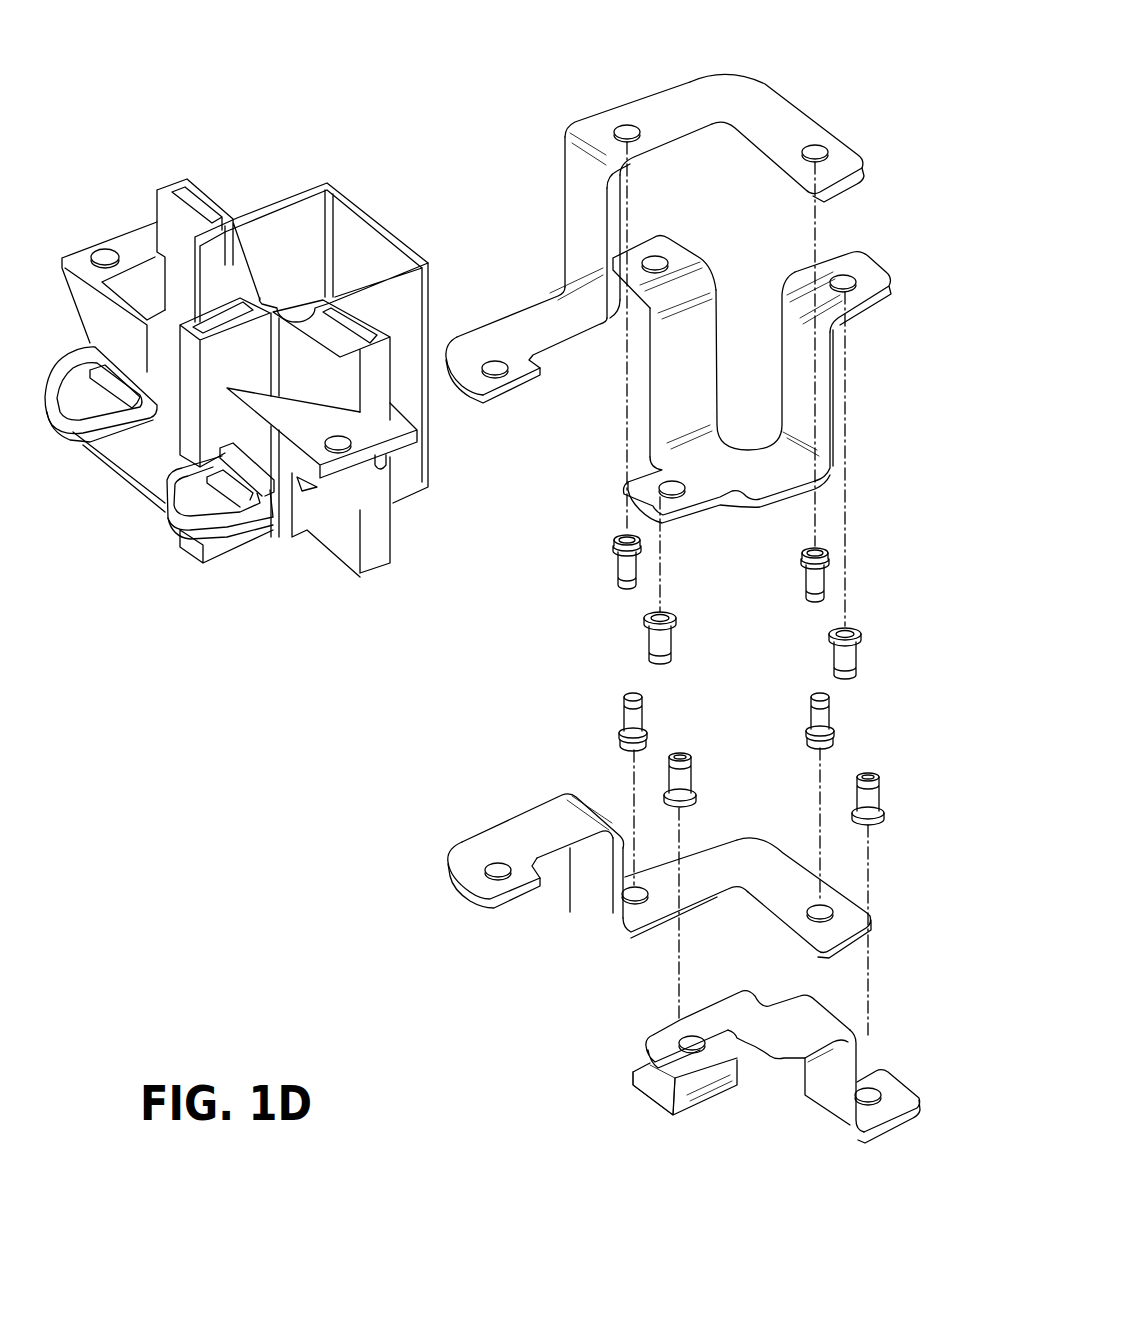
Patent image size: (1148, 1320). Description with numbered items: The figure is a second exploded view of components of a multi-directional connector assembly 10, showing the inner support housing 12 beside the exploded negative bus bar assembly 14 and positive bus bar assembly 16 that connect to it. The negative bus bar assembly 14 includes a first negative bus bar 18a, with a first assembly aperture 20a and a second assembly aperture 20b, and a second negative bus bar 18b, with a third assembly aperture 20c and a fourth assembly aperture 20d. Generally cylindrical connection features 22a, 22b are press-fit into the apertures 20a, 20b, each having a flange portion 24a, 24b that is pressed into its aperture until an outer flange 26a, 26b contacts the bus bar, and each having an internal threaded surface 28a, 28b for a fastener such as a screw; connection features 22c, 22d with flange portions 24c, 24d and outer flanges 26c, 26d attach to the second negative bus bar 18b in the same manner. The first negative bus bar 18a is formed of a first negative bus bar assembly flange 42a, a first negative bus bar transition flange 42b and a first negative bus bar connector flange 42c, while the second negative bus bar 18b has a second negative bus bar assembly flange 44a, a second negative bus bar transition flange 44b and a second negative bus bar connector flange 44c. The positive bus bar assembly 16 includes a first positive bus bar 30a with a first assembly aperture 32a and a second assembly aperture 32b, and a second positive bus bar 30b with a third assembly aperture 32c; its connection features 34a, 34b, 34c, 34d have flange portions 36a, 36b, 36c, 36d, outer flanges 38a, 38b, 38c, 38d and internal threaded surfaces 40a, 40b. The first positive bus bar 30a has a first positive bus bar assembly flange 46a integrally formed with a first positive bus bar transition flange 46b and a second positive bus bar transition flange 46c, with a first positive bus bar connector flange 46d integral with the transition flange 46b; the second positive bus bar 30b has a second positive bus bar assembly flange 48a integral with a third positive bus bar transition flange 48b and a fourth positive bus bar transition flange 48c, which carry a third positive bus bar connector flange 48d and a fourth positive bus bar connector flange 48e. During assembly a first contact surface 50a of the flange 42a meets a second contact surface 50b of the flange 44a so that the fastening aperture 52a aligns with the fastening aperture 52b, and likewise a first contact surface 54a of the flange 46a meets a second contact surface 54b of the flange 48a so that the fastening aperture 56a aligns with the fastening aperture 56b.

The multi-directional connector assembly 10 is at (237, 753).
The inner support housing 12 is at (143, 462).
The negative bus bar assembly 14 is at (672, 247).
The positive bus bar assembly 16 is at (689, 972).
The first negative bus bar 18a is at (794, 125).
The second negative bus bar 18b is at (685, 890).
The first assembly aperture 20a is at (625, 125).
The second assembly aperture 20b is at (825, 145).
The third assembly aperture 20c is at (650, 905).
The fourth assembly aperture 20d is at (822, 905).
The connection feature 22a is at (585, 553).
The connection feature 22b is at (809, 563).
The connection feature 22c is at (635, 725).
The connection feature 22d is at (830, 723).
The flange portion 24a is at (615, 547).
The flange portion 24b is at (830, 556).
The flange portion 24c is at (623, 745).
The flange portion 24d is at (815, 748).
The outer flange 26a is at (620, 565).
The outer flange 26b is at (805, 570).
The outer flange 26c is at (642, 735).
The outer flange 26d is at (832, 735).
The internal threaded surface 28a is at (625, 535).
The internal threaded surface 28b is at (820, 548).
The first positive bus bar 30a is at (750, 374).
The second positive bus bar 30b is at (767, 1059).
The first assembly aperture 32a is at (845, 276).
The second assembly aperture 32b is at (655, 256).
The third assembly aperture 32c is at (872, 1087).
The connection feature 34a is at (829, 645).
The connection feature 34b is at (641, 630).
The connection feature 34c is at (899, 809).
The connection feature 34d is at (695, 794).
The flange portion 36a is at (828, 632).
The flange portion 36b is at (645, 620).
The flange portion 36c is at (874, 823).
The flange portion 36d is at (676, 804).
The outer flange 38a is at (830, 652).
The outer flange 38b is at (648, 640).
The outer flange 38c is at (878, 810).
The outer flange 38d is at (693, 788).
The internal threaded surface 40a is at (850, 627).
The internal threaded surface 40b is at (660, 612).
The first negative bus bar assembly flange 42a is at (538, 312).
The first negative bus bar transition flange 42b is at (560, 197).
The first negative bus bar connector flange 42c is at (660, 109).
The second negative bus bar assembly flange 44a is at (540, 817).
The second negative bus bar transition flange 44b is at (593, 883).
The second negative bus bar connector flange 44c is at (782, 898).
The first positive bus bar assembly flange 46a is at (700, 463).
The first positive bus bar transition flange 46b is at (808, 365).
The second positive bus bar transition flange 46c is at (655, 300).
The first positive bus bar connector flange 46d is at (862, 270).
The second positive bus bar assembly flange 48a is at (727, 1013).
The third positive bus bar transition flange 48b is at (830, 1100).
The fourth positive bus bar transition flange 48c is at (653, 1104).
The third positive bus bar connector flange 48d is at (910, 1082).
The fourth positive bus bar connector flange 48e is at (655, 1083).
The first contact surface 50a is at (493, 371).
The second contact surface 50b is at (476, 822).
The fastening aperture 52a is at (493, 362).
The fastening aperture 52b is at (497, 864).
The first contact surface 54a is at (696, 505).
The second contact surface 54b is at (740, 1050).
The fastening aperture 56a is at (665, 483).
The fastening aperture 56b is at (685, 1040).